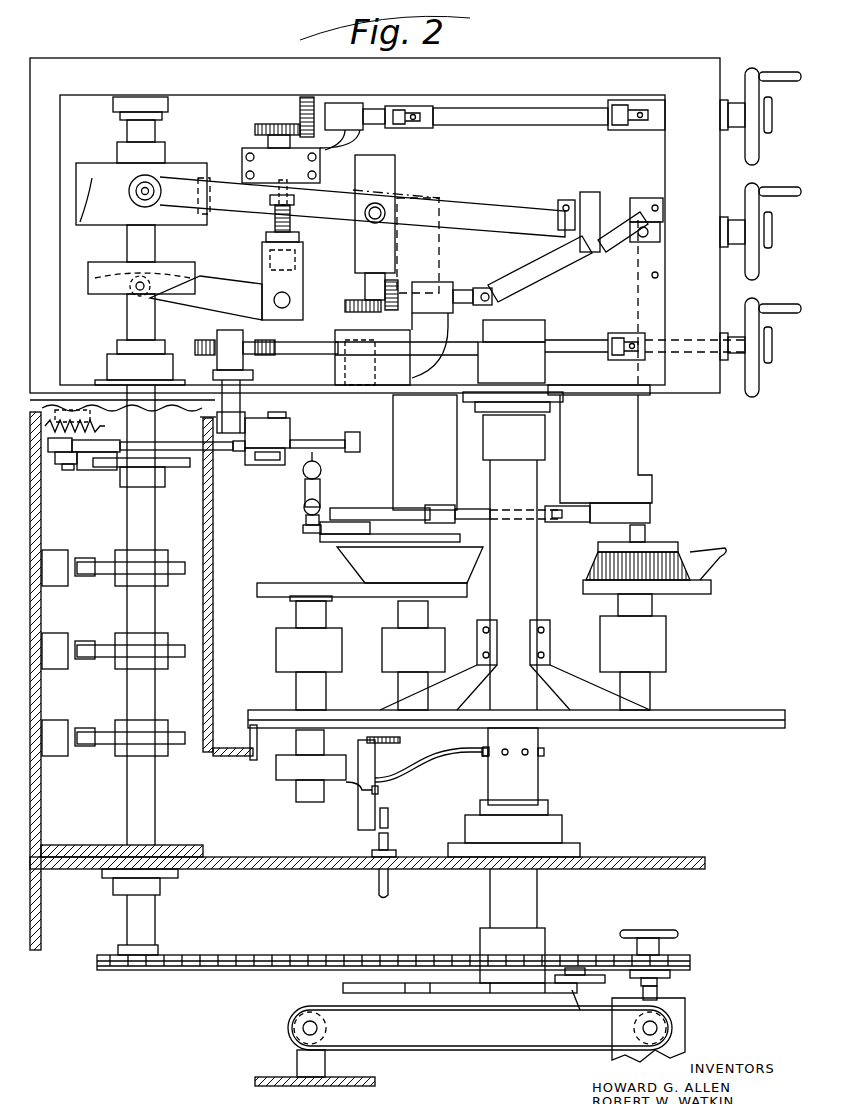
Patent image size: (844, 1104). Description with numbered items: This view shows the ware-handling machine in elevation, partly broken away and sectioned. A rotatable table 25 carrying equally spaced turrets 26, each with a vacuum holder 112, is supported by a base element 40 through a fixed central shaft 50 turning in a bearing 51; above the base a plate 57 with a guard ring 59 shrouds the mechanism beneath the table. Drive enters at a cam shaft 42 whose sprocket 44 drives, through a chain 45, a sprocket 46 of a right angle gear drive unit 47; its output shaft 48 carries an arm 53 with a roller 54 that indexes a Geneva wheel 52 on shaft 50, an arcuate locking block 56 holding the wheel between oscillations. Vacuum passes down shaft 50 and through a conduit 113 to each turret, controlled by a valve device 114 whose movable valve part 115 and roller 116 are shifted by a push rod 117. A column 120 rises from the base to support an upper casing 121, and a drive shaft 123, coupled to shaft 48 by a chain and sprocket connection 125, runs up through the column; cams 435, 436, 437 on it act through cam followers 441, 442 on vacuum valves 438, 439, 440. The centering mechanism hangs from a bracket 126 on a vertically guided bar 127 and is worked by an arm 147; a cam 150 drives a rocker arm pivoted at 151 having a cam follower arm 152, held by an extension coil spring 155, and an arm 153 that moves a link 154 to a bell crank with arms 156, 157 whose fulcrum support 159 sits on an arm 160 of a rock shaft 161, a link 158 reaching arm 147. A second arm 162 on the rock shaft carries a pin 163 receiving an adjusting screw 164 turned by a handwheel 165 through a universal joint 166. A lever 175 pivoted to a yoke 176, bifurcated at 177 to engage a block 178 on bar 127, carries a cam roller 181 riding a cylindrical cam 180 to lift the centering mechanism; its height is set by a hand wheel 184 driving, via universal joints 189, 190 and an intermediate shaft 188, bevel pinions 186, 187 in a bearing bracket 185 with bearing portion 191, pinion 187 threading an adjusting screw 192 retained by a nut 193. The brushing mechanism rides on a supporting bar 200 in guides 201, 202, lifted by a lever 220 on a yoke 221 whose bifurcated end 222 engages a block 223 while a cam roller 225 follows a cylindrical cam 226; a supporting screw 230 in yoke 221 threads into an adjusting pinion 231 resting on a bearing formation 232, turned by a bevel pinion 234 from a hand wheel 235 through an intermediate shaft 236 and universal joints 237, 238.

The upper casing 121 is at (605, 50).
The hand wheel 184 is at (755, 68).
The adjusting hand wheel 235 is at (758, 192).
The handwheel 165 is at (752, 397).
The intermediate shaft 188 is at (530, 108).
The universal joint 189 is at (418, 106).
The supporting bearing bracket 185 is at (345, 108).
The universal joint 190 is at (622, 100).
The bevel pinion 186 is at (305, 100).
The bevel pinion 187 is at (268, 128).
The bearing portion 191 is at (242, 155).
The yoke 221 is at (395, 182).
The bifurcated end 177 is at (438, 250).
The lever 220 is at (478, 207).
The cam roller 225 is at (158, 183).
The cylindrical cam 226 is at (92, 172).
The cylindrical cam 180 is at (92, 264).
The cam roller 181 is at (133, 292).
The rotatable vertical pin 163 is at (238, 330).
The lever 175 is at (303, 283).
The yoke 176 is at (262, 265).
The retaining nut 193 is at (291, 213).
The adjusting screw 192 is at (275, 236).
The supporting screw 230 is at (345, 306).
The mating bevel pinion 234 is at (396, 284).
The second arm 162 is at (217, 338).
The rock shaft 161 is at (222, 372).
The adjusting pinion 231 is at (306, 342).
The bearing formation 232 is at (335, 368).
The block 178 is at (455, 284).
The intermediate shaft 236 is at (546, 274).
The universal joint 237 is at (500, 306).
The adjusting screw 164 is at (510, 354).
The universal joint 166 is at (614, 338).
The guide 201 is at (560, 200).
The bifurcated end 222 is at (590, 194).
The block 223 is at (616, 234).
The guide 202 is at (662, 198).
The universal joint 238 is at (650, 233).
The column 120 is at (212, 596).
The plate or table element 57 is at (235, 760).
The shroud or guard ring 59 is at (250, 735).
The base element 40 is at (668, 857).
The drive shaft 123 is at (156, 920).
The extension coil spring 155 is at (70, 425).
The forwardly extending arm 153 is at (55, 464).
The cam follower arm 152 is at (100, 470).
The link 154 is at (180, 442).
The cam 150 is at (175, 467).
The pivot 151 is at (75, 475).
The medial fulcrum support 159 is at (288, 418).
The arm 160 is at (250, 440).
The forwardly extending arm 156 is at (272, 465).
The arm 157 is at (305, 436).
The link 158 is at (302, 496).
The vacuum valve 438 is at (55, 586).
The cam follower 441 is at (88, 576).
The cam 435 is at (175, 586).
The vacuum valve 439 is at (55, 669).
The cam follower 442 is at (88, 659).
The cam 436 is at (175, 669).
The vacuum valve 440 is at (55, 757).
The cam 437 is at (175, 757).
The vertically extending bar 127 is at (448, 445).
The vertically slidable supporting bar 200 is at (620, 445).
The rotatable table 25 is at (745, 710).
The arm 147 is at (340, 522).
The bracket 126 is at (418, 506).
The vacuum holder 112 is at (712, 586).
The turret 26 is at (388, 683).
The central supporting shaft 50 is at (540, 784).
The bearing 51 is at (562, 830).
The valve device 114 is at (358, 828).
The conduit 113 is at (420, 770).
The vertically movable valve part 115 is at (380, 800).
The valve shifting roller 116 is at (390, 822).
The push rod 117 is at (392, 852).
The chain and sprocket connection 125 is at (186, 972).
The Geneva wheel 52 is at (343, 989).
The arm 53 is at (578, 975).
The arcuate locking block 56 is at (662, 992).
The output shaft 48 is at (658, 996).
The right angle gear drive unit 47 is at (688, 1018).
The sprocket 46 is at (672, 1030).
The chain 45 is at (496, 1050).
The cam shaft 42 is at (292, 1030).
The sprocket 44 is at (322, 1030).
The roller 54 is at (574, 995).